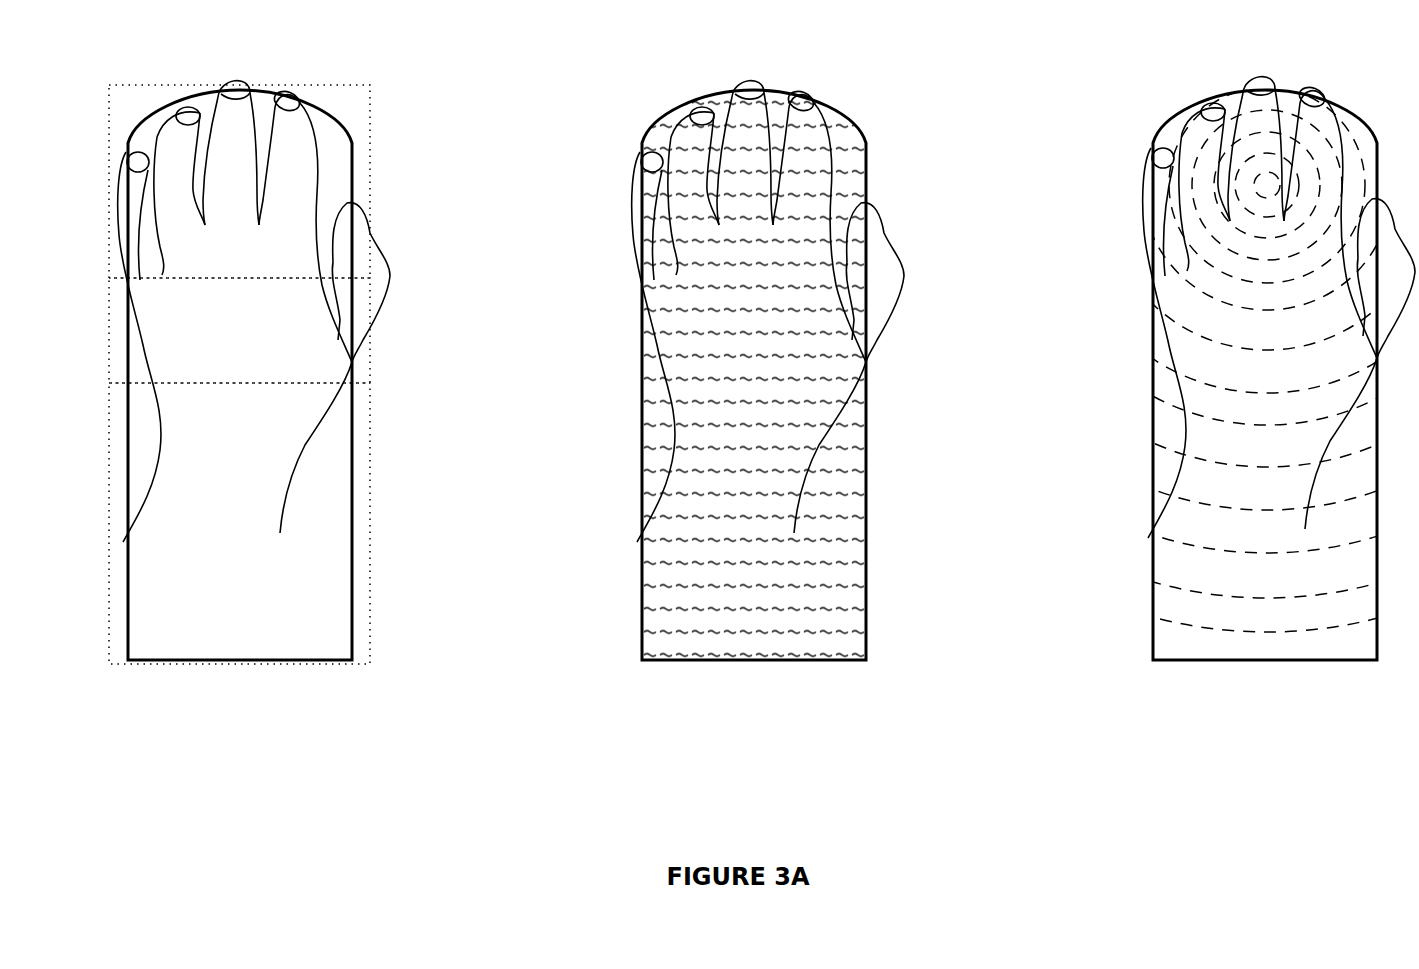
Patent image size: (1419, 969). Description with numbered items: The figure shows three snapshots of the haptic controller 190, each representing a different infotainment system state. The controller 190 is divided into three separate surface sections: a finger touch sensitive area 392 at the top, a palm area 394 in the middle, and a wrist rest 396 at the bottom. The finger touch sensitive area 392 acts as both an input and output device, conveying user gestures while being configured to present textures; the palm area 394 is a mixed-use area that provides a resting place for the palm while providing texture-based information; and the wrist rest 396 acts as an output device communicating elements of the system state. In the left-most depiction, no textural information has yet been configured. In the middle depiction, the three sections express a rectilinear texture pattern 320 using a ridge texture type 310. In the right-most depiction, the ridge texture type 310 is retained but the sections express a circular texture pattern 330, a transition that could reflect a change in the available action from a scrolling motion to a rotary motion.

The finger touch sensitive area 392 is at (372, 135).
The palm area 394 is at (372, 340).
The wrist rest 396 is at (370, 507).
The rectilinear texture pattern 320 is at (683, 598).
The ridge texture type 310 is at (1165, 373).
The circular texture pattern 330 is at (1211, 577).
The haptic controller 190 is at (352, 636).